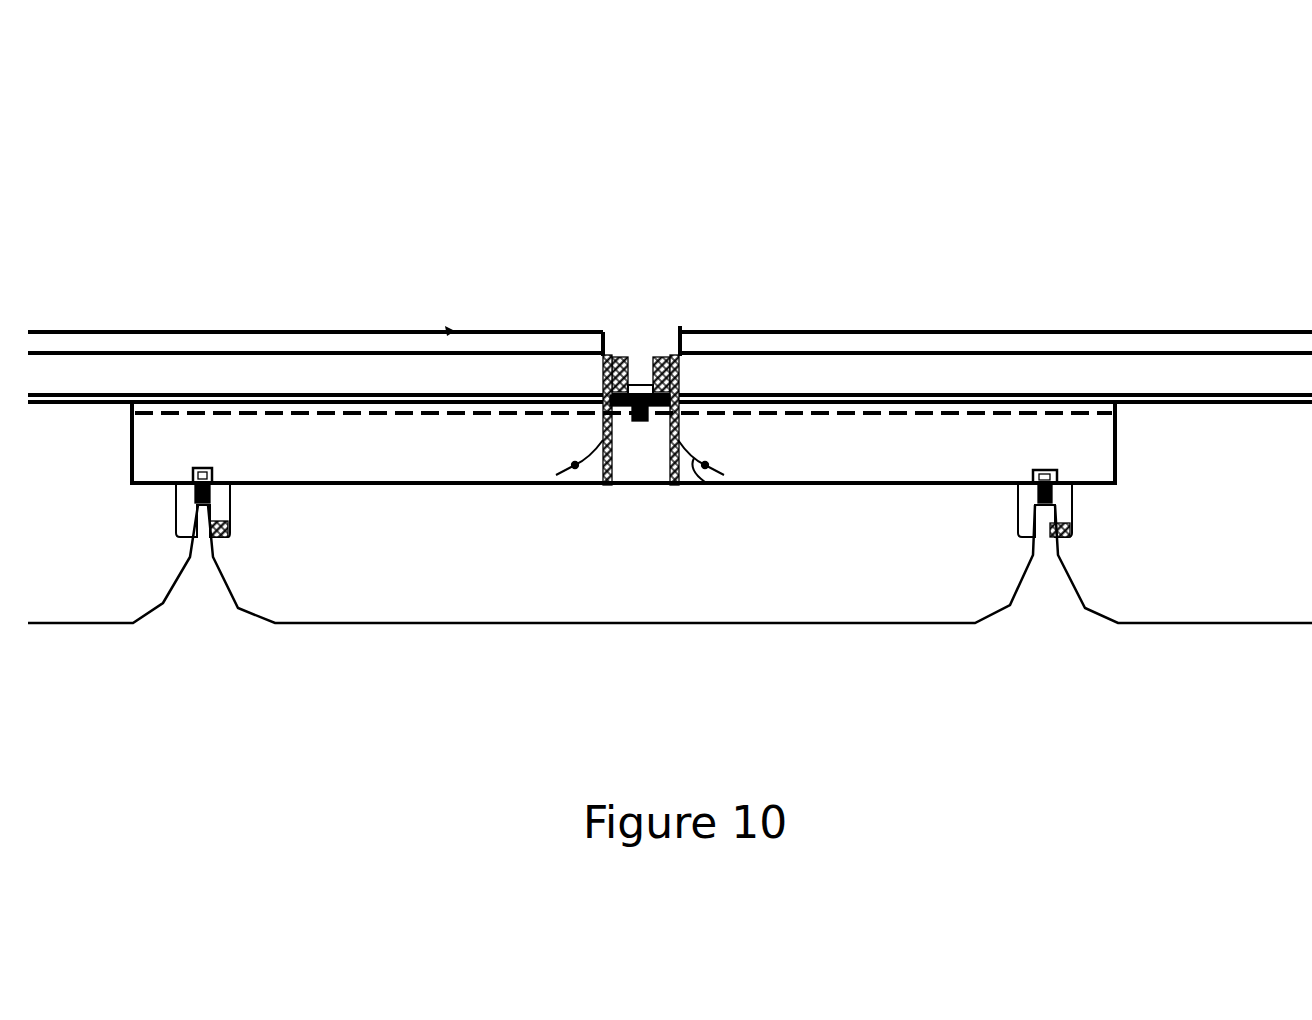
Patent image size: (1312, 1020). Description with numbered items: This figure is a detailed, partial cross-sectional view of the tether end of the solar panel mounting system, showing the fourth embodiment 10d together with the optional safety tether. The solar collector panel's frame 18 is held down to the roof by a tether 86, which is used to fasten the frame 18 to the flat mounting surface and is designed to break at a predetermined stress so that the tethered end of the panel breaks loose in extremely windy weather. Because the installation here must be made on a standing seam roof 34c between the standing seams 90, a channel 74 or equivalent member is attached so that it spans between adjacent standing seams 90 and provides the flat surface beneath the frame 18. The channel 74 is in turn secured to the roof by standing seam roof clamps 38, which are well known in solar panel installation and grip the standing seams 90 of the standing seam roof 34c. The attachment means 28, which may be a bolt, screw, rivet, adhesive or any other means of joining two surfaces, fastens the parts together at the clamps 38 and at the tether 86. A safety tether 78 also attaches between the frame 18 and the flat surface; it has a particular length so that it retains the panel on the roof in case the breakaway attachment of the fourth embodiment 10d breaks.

The fourth embodiment 10d is at (641, 266).
The frame 18 is at (422, 363).
The means for mounting 28 is at (618, 340).
The standing seam roof 34c is at (640, 623).
The standing seam roof clamp 38 is at (222, 508).
The channel 74 is at (1087, 447).
The safety tether 78 is at (705, 483).
The tether 86 is at (600, 483).
The standing seams 90 is at (1036, 588).